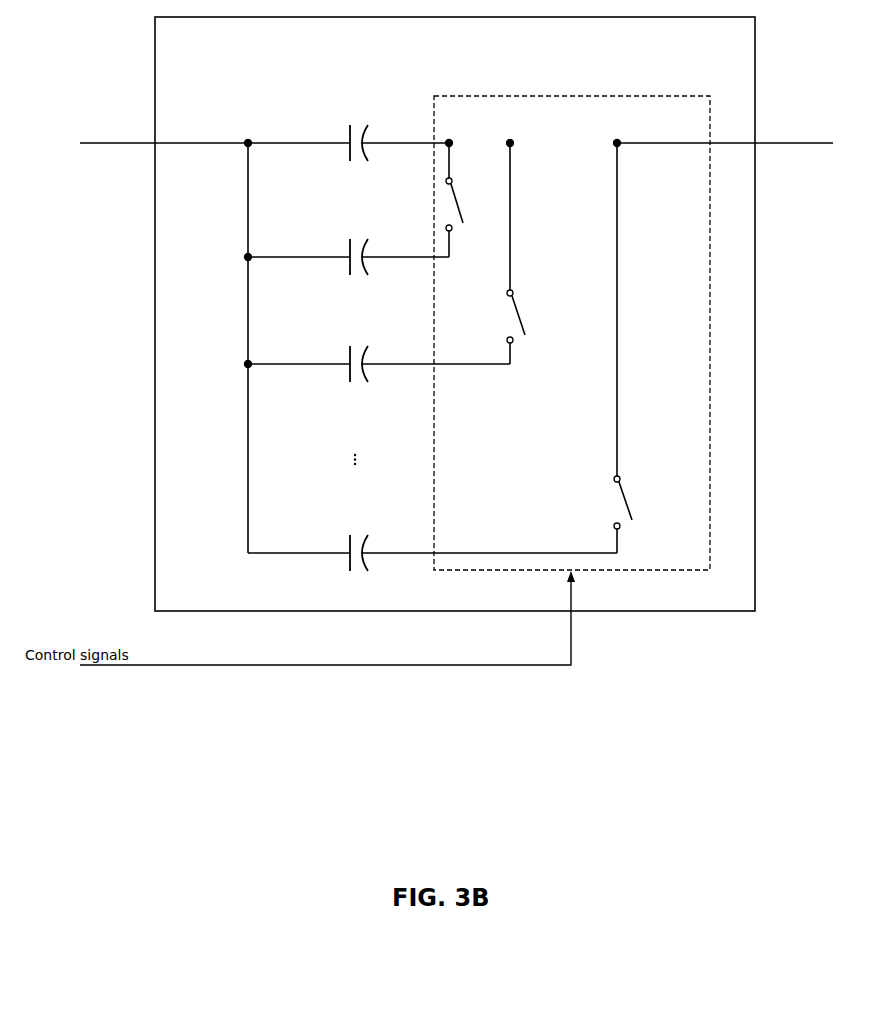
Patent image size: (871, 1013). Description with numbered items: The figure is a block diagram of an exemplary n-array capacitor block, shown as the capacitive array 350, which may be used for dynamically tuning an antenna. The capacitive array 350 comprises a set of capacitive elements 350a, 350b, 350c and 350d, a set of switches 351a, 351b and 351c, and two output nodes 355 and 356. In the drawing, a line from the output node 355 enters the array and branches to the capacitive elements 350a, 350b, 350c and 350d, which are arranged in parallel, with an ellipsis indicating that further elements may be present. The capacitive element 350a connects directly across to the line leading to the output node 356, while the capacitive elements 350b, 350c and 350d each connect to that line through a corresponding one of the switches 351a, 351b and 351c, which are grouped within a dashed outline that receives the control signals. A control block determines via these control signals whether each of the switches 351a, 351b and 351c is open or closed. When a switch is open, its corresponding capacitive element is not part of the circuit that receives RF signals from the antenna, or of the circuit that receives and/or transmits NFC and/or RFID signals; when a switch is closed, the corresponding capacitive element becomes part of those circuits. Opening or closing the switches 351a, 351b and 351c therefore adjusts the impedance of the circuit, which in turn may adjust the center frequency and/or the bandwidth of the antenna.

The capacitive array 350 is at (224, 55).
The capacitive element 350a is at (376, 120).
The capacitive element 350b is at (376, 229).
The capacitive element 350c is at (376, 337).
The capacitive element 350d is at (376, 523).
The switch 351a is at (498, 207).
The switch 351b is at (568, 312).
The switch 351c is at (682, 497).
The output node 355 is at (164, 133).
The output node 356 is at (731, 133).